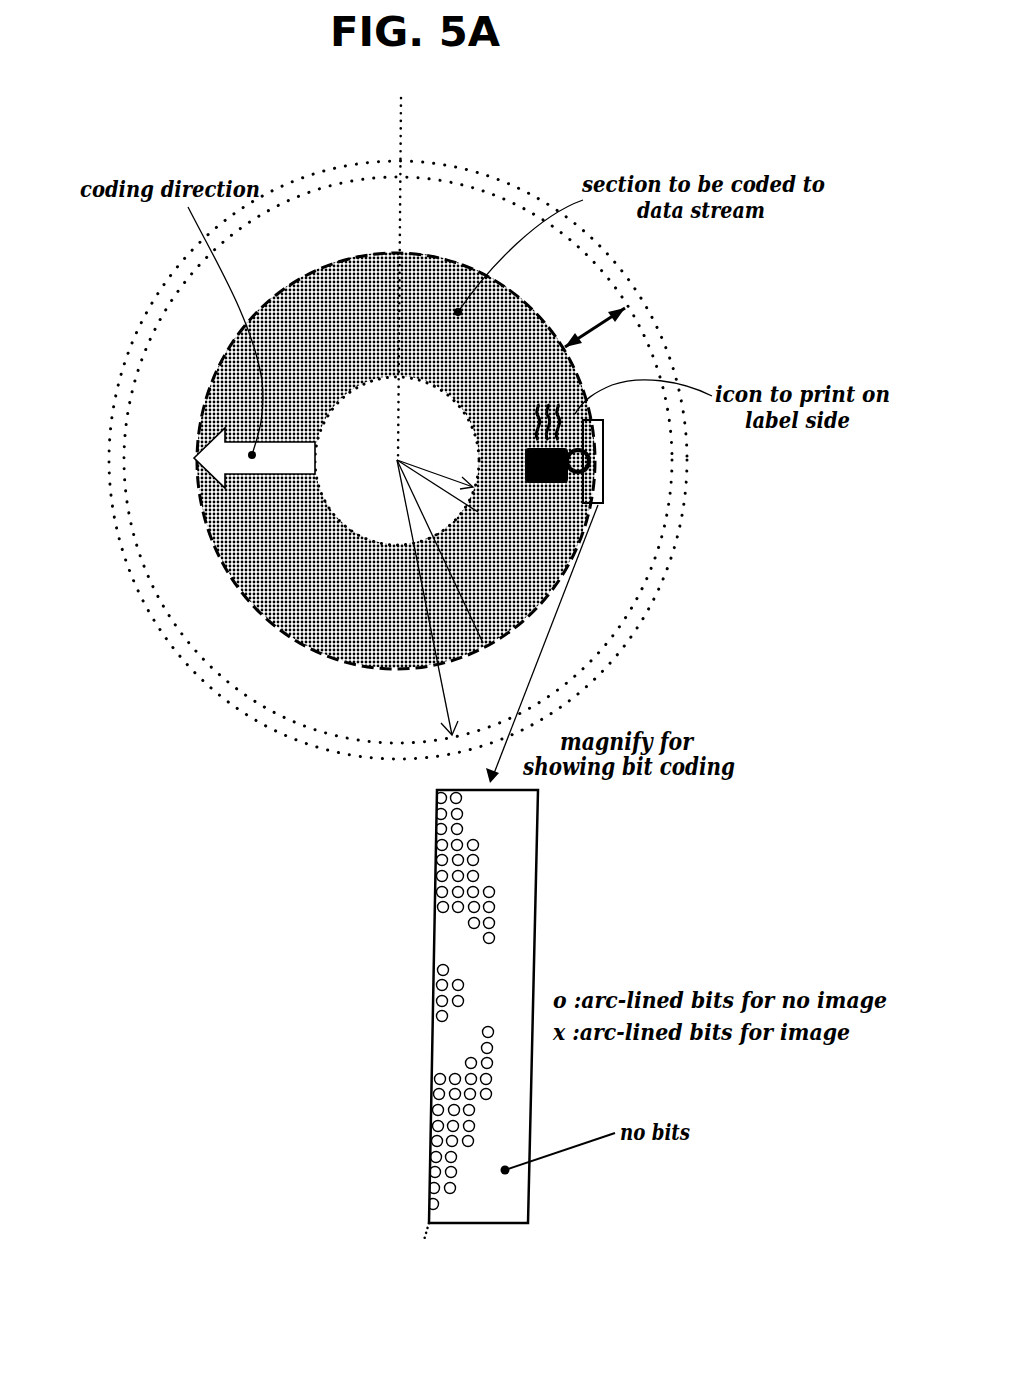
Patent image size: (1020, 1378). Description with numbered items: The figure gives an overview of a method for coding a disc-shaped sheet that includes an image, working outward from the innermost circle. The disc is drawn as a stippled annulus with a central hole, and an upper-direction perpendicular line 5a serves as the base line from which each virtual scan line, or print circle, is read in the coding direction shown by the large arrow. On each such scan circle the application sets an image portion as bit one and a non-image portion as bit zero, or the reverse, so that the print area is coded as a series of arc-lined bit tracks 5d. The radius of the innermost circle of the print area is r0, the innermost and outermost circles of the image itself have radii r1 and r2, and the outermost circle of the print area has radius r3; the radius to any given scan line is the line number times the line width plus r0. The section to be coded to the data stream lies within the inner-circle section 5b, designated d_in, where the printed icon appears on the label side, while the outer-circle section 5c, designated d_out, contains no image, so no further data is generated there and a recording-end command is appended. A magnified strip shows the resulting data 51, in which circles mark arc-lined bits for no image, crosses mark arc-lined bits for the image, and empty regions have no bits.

The upper-direction perpendicular line 5a is at (402, 130).
The inner-circle section 5b is at (523, 318).
The outer-circle section 5c is at (593, 333).
The arc-lined bit track 5d is at (320, 657).
The data 51 is at (538, 872).
The radius of the innermost circle of the print area r0 is at (435, 470).
The radius of the innermost circle of the image r1 is at (450, 491).
The radius of the outermost circle of the image r2 is at (448, 551).
The radius of the outermost circle of the print area r3 is at (437, 597).